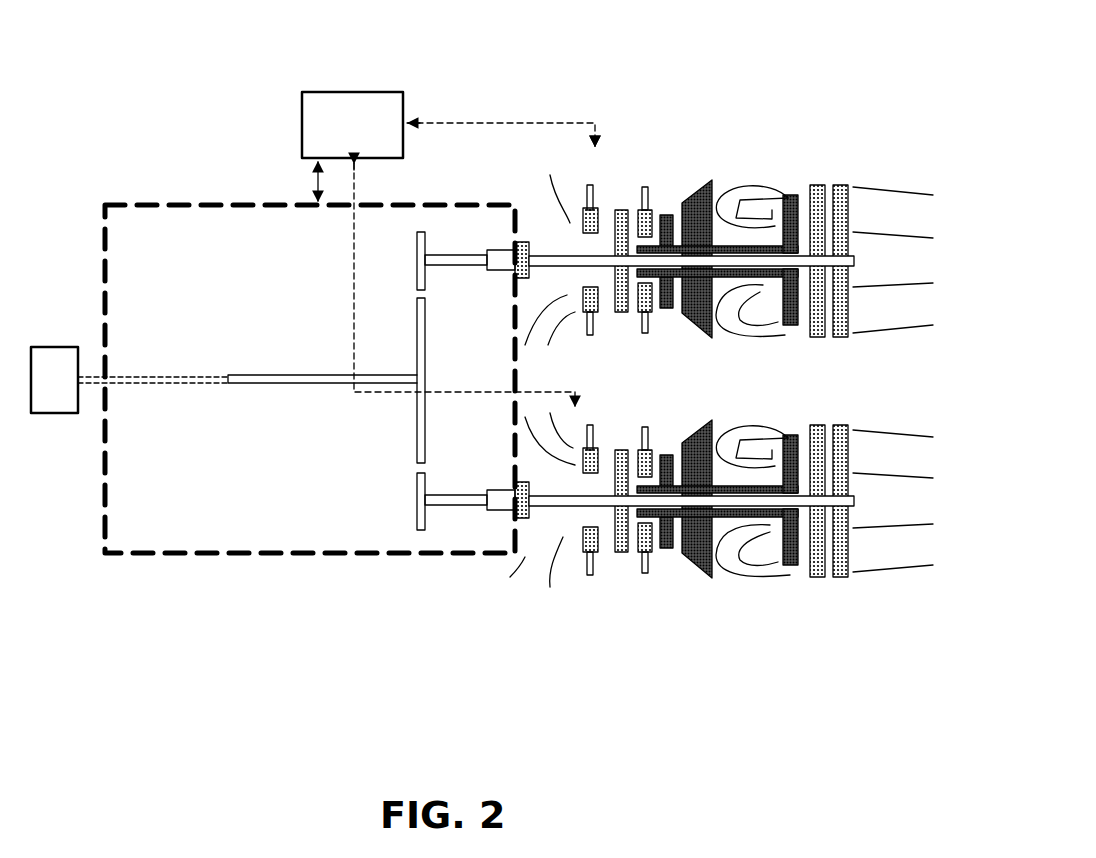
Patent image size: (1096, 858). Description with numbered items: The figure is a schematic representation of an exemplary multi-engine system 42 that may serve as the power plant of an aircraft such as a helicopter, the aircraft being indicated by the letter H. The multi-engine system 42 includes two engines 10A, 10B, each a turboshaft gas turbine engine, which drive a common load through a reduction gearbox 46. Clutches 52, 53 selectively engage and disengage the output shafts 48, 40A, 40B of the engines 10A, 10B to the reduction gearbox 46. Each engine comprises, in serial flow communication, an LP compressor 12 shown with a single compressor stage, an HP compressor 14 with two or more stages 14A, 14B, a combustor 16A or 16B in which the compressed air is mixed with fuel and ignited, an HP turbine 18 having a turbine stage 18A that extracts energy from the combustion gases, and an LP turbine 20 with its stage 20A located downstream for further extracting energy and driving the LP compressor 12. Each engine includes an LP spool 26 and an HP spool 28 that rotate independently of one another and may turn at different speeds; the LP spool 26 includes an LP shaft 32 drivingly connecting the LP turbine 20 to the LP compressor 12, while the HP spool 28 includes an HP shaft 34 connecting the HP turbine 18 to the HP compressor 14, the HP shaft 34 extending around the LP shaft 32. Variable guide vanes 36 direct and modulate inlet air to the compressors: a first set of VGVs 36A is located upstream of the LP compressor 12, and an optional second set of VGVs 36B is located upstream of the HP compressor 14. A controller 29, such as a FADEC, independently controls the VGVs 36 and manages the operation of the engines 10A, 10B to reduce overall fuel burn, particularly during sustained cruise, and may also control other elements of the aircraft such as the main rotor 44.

The first engine 10A is at (818, 102).
The second engine 10B is at (789, 646).
The LP compressor 12 is at (622, 210).
The HP compressor 14 is at (648, 170).
The HP compressor stages 14A is at (667, 215).
The HP compressor stage 14B is at (667, 453).
The combustor 16A is at (744, 584).
The combustor 16B is at (748, 343).
The HP turbine 18 is at (775, 172).
The HP turbine stage 18A is at (788, 195).
The LP turbine 20 is at (817, 338).
The LP turbine stage 20A is at (840, 185).
The LP spool 26 is at (856, 262).
The HP spool 28 is at (723, 230).
The controller 29 is at (403, 103).
The LP shaft 32 is at (687, 267).
The HP shaft 34 is at (765, 322).
The variable guide vanes 36 is at (590, 584).
The first set of VGVs 36A is at (587, 337).
The second set of VGVs 36B is at (645, 337).
The output shaft 40A is at (552, 253).
The output shaft 40B is at (556, 520).
The multi-engine system 42 is at (155, 145).
The main rotor 44 is at (55, 347).
The reduction gearbox 46 is at (236, 555).
The output shaft 48 is at (452, 255).
The clutch 52 is at (503, 481).
The clutch 53 is at (526, 237).